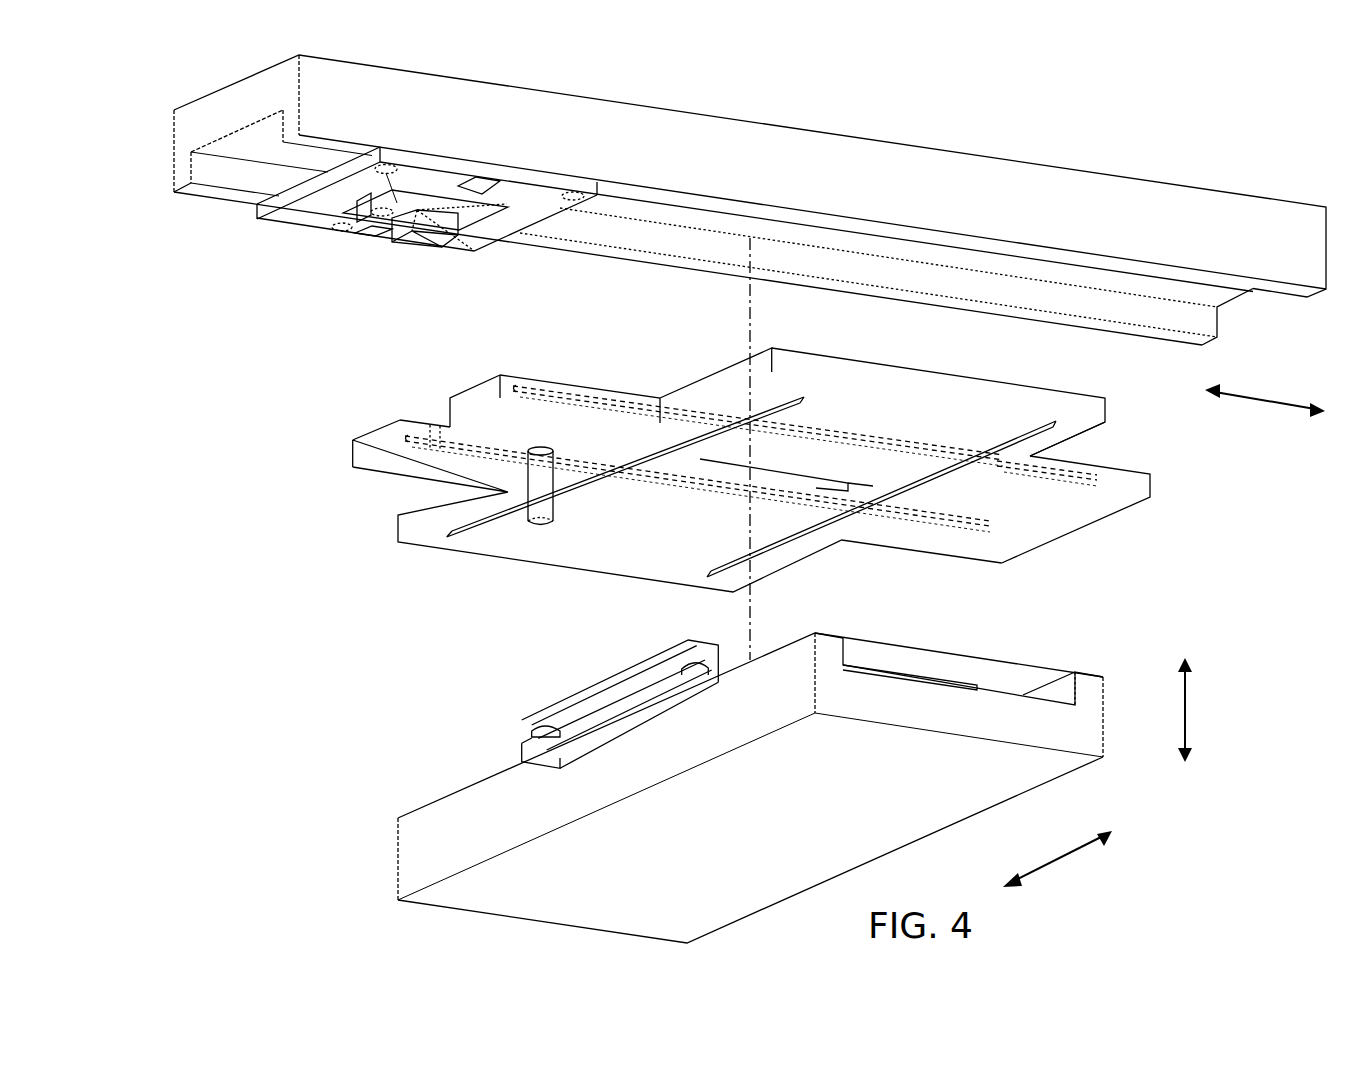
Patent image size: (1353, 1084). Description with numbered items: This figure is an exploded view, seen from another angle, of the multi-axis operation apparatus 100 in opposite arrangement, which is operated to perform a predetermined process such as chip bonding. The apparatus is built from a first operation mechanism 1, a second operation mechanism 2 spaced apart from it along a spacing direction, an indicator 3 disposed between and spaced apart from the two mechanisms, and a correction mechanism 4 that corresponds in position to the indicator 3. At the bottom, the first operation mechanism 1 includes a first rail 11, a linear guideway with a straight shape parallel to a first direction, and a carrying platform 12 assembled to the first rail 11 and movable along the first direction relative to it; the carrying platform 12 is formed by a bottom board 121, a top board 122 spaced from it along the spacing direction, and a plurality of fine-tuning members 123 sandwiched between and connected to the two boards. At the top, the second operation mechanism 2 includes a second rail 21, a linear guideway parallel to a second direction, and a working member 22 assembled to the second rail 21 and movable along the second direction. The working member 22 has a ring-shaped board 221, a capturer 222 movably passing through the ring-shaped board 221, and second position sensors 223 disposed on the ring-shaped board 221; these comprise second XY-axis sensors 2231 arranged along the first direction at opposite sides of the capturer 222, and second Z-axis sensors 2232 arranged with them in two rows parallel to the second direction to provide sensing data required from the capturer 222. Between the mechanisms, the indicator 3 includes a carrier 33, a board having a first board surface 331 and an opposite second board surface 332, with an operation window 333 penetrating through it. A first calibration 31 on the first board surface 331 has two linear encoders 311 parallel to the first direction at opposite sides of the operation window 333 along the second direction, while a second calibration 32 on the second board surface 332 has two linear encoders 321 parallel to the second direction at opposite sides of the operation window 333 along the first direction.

The multi-axis operation apparatus 100 is at (699, 499).
The first operation mechanism 1 is at (750, 770).
The first rail 11 is at (494, 776).
The carrying platform 12 is at (580, 683).
The bottom board 121 is at (653, 696).
The top board 122 is at (598, 690).
The fine-tuning members 123 is at (543, 728).
The second operation mechanism 2 is at (699, 200).
The second rail 21 is at (170, 183).
The working member 22 is at (679, 220).
The ring-shaped board 221 is at (437, 164).
The capturer 222 is at (420, 238).
The second position sensors 223 is at (456, 258).
The second XY-axis sensors 2231 is at (373, 232).
The second Z-axis sensors 2232 is at (341, 234).
The indicator 3 is at (774, 487).
The first calibration 31 is at (751, 478).
The linear encoders 311 is at (1012, 446).
The second calibration 32 is at (729, 476).
The linear encoders 321 is at (627, 392).
The carrier 33 is at (948, 466).
The first board surface 331 is at (1050, 522).
The second board surface 332 is at (1118, 458).
The operation window 333 is at (826, 474).
The correction mechanism 4 is at (544, 534).